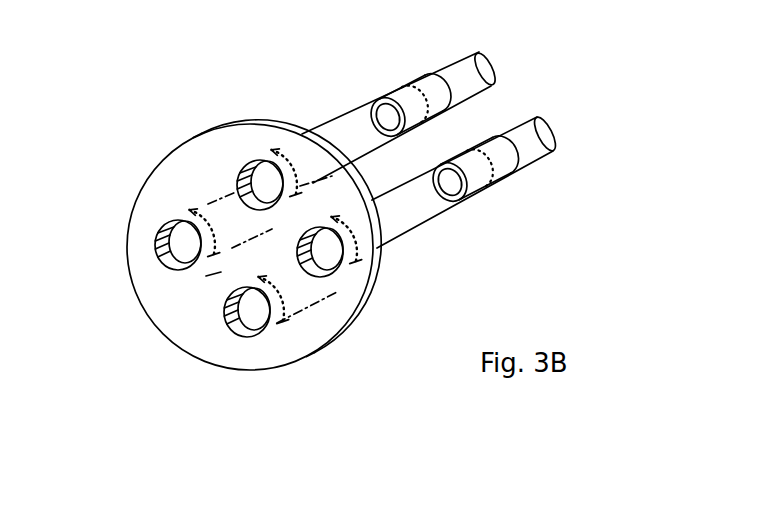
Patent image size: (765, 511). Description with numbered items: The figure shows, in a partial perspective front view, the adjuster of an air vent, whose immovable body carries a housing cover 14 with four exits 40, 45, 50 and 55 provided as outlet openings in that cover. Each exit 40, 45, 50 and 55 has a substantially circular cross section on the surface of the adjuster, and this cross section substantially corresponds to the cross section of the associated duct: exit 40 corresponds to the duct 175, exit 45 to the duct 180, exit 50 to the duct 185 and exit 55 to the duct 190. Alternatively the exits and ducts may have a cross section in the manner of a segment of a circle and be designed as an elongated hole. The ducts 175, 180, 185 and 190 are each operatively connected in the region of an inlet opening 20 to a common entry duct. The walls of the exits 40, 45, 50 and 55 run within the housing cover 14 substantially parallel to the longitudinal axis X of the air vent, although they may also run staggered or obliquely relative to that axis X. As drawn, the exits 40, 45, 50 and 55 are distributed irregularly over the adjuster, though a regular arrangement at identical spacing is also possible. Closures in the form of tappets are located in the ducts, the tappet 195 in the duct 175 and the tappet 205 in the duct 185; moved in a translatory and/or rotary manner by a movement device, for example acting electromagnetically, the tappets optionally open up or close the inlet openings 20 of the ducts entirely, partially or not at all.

The housing cover 14 is at (200, 157).
The exit 40 is at (263, 177).
The exit 45 is at (190, 267).
The exit 50 is at (334, 258).
The exit 55 is at (252, 318).
The duct 180 is at (192, 210).
The duct 190 is at (308, 309).
The longitudinal axis X is at (220, 275).
The duct 175 is at (446, 102).
The duct 185 is at (518, 193).
The tappet 195 is at (488, 66).
The tappet 205 is at (541, 134).
The inlet opening 20 is at (428, 70).